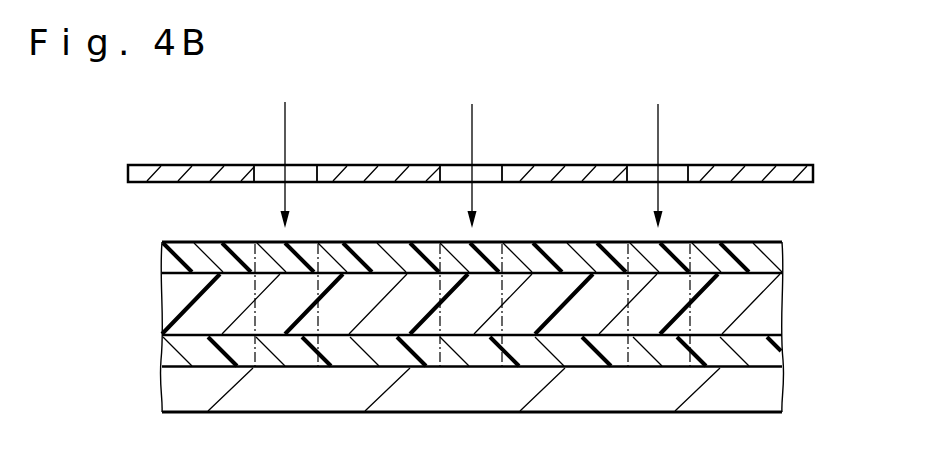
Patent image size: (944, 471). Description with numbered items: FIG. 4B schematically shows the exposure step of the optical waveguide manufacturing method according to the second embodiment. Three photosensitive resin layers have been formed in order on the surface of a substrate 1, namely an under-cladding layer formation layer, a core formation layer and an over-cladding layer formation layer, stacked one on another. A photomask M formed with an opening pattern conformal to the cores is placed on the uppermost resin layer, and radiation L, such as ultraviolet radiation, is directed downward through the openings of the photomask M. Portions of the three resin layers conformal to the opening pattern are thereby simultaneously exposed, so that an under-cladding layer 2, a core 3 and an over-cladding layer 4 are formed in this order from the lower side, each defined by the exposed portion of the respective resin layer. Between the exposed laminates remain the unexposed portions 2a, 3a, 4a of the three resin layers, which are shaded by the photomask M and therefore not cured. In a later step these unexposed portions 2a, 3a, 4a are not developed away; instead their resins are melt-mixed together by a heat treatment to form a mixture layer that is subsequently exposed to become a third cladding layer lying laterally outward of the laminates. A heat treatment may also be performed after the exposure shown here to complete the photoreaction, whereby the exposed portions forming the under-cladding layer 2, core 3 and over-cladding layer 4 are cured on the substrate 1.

The substrate 1 is at (767, 399).
The under-cladding layer 2 is at (656, 244).
The core 3 is at (684, 256).
The over-cladding layer 4 is at (728, 245).
The unexposed portion 2a is at (347, 353).
The unexposed portion 3a is at (362, 292).
The unexposed portion 4a is at (422, 248).
The radiation L is at (472, 120).
The photomask M is at (791, 167).